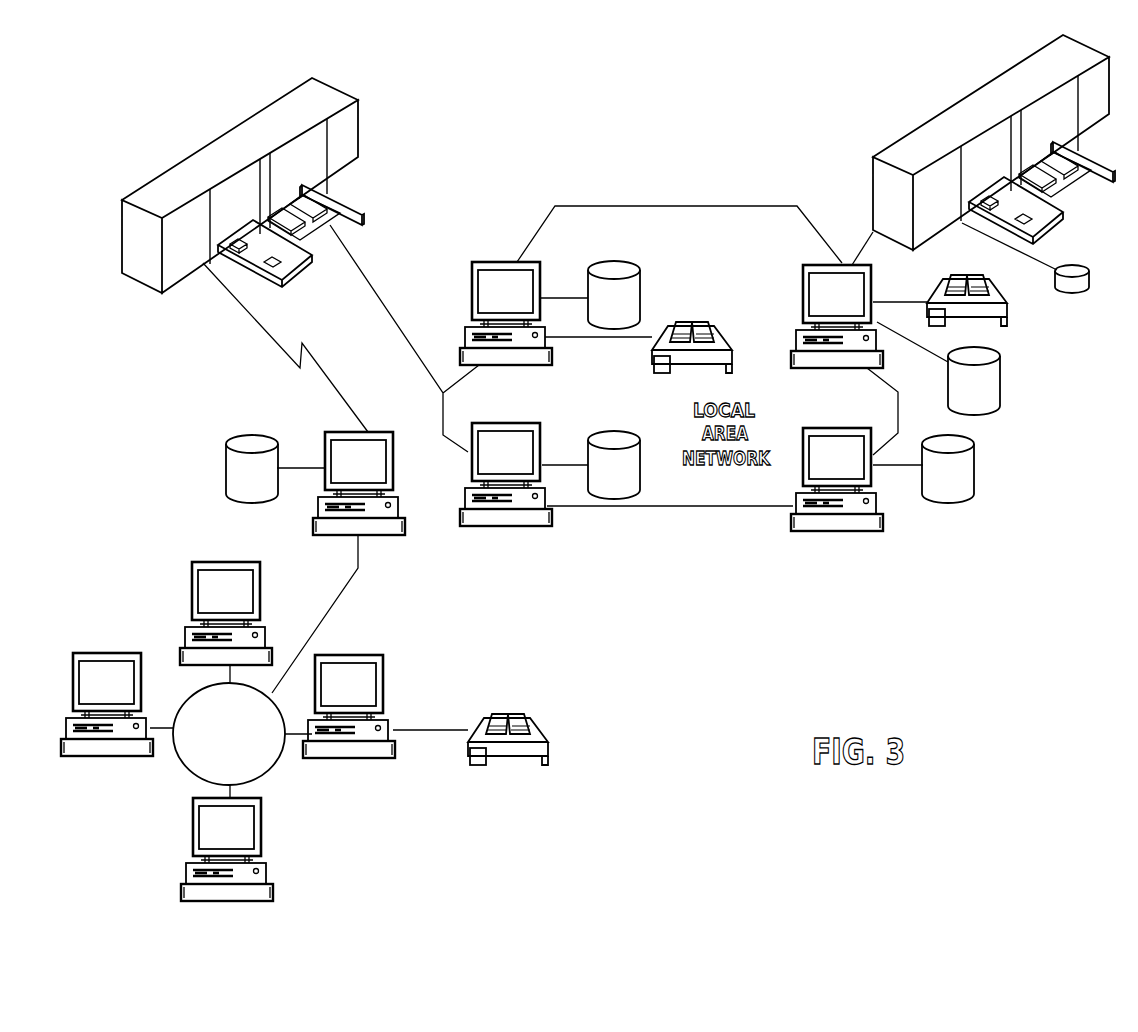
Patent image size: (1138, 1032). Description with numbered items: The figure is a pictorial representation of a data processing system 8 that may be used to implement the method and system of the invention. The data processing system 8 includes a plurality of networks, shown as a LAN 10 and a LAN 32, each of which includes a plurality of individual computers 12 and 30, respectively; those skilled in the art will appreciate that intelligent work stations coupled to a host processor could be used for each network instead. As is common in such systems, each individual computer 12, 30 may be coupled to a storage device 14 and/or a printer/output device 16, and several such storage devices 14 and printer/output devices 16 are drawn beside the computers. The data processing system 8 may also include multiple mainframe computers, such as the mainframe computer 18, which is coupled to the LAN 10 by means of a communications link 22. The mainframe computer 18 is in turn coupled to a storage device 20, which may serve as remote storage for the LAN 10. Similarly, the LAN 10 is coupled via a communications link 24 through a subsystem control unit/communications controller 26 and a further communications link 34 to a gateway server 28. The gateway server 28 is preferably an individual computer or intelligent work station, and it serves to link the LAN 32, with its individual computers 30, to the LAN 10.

The data processing system 8 is at (738, 197).
The LAN 10 is at (657, 508).
The individual computer 12 is at (490, 263).
The storage device 14 is at (630, 262).
The printer/output device 16 is at (720, 328).
The mainframe computer 18 is at (957, 107).
The storage device 20 is at (1067, 293).
The communications link 22 is at (865, 252).
The communications link 24 is at (372, 287).
The subsystem control unit/communications controller 26 is at (178, 162).
The gateway server 28 is at (325, 435).
The individual computer 30 is at (190, 585).
The LAN 32 is at (178, 760).
The communications link 34 is at (238, 307).